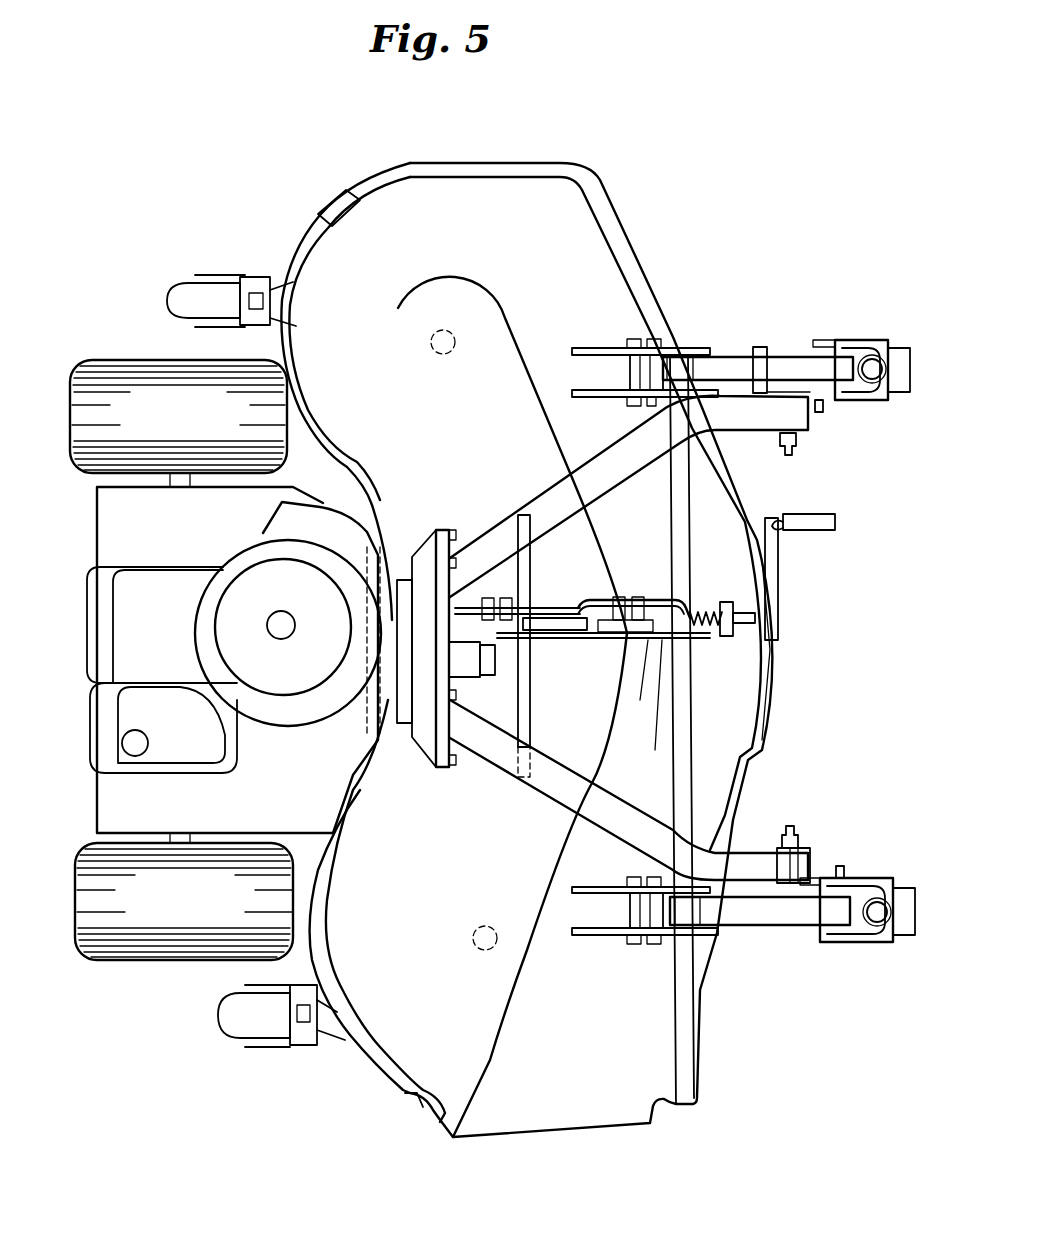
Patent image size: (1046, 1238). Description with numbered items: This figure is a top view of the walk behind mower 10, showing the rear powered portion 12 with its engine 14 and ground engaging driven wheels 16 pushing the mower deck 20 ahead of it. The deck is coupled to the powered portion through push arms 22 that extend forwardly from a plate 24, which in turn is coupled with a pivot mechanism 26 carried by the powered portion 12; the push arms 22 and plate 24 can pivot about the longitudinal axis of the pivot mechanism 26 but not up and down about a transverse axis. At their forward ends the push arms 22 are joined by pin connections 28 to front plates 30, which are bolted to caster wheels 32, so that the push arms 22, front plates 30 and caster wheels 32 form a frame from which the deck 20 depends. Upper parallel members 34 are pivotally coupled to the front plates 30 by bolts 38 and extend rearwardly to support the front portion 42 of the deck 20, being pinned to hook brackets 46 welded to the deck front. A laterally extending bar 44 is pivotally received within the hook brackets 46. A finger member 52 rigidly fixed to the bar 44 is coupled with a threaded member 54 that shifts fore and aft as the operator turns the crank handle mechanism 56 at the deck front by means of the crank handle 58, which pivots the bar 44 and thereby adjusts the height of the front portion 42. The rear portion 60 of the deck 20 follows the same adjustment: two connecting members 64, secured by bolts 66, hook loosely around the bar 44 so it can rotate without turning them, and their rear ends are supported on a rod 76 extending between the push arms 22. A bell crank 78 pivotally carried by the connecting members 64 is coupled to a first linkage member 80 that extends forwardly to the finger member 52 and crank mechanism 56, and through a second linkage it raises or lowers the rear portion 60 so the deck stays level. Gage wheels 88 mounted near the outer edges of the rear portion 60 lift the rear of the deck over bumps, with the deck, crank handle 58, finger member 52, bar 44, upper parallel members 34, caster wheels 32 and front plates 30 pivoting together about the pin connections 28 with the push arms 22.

The walk behind mower 10 is at (720, 130).
The rear powered portion 12 is at (290, 833).
The engine 14 is at (298, 677).
The ground engaging driven wheels 16 is at (143, 360).
The mower deck 20 is at (410, 1105).
The push arms 22 is at (547, 487).
The plate 24 is at (465, 775).
The pivot mechanism 26 is at (475, 685).
The pin connections 28 is at (795, 455).
The front plates 30 is at (760, 360).
The caster wheels 32 is at (900, 340).
The upper parallel members 34 is at (730, 345).
The bolts 38 is at (823, 412).
The front portion of the mower deck 42 is at (782, 670).
The bar 44 is at (690, 752).
The hook brackets 46 is at (600, 393).
The finger member 52 is at (662, 650).
The threaded member 54 is at (700, 632).
The crank handle mechanism 56 is at (733, 588).
The crank handle 58 is at (832, 520).
The rear portion of the deck 60 is at (350, 192).
The connecting members 64 is at (552, 597).
The bolts 66 is at (645, 645).
The rod 76 is at (532, 715).
The bell crank 78 is at (545, 632).
The first linkage member 80 is at (652, 608).
The gage wheels 88 is at (168, 290).